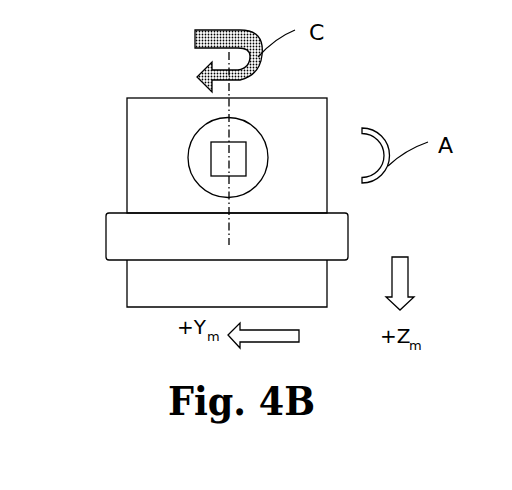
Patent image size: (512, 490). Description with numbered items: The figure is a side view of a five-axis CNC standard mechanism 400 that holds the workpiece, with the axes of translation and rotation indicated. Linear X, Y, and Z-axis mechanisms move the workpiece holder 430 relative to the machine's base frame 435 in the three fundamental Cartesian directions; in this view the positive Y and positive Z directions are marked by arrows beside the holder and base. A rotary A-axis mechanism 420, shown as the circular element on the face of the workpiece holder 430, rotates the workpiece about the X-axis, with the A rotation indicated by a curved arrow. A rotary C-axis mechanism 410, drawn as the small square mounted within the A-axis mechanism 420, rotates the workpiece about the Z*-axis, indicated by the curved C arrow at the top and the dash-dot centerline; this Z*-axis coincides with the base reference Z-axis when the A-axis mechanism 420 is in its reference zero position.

The 5-axis CNC standard mechanism 400 is at (92, 61).
The rotary C-axis mechanism 410 is at (246, 174).
The rotary A-axis mechanism 420 is at (254, 128).
The workpiece holder 430 is at (127, 132).
The base frame 435 is at (247, 294).